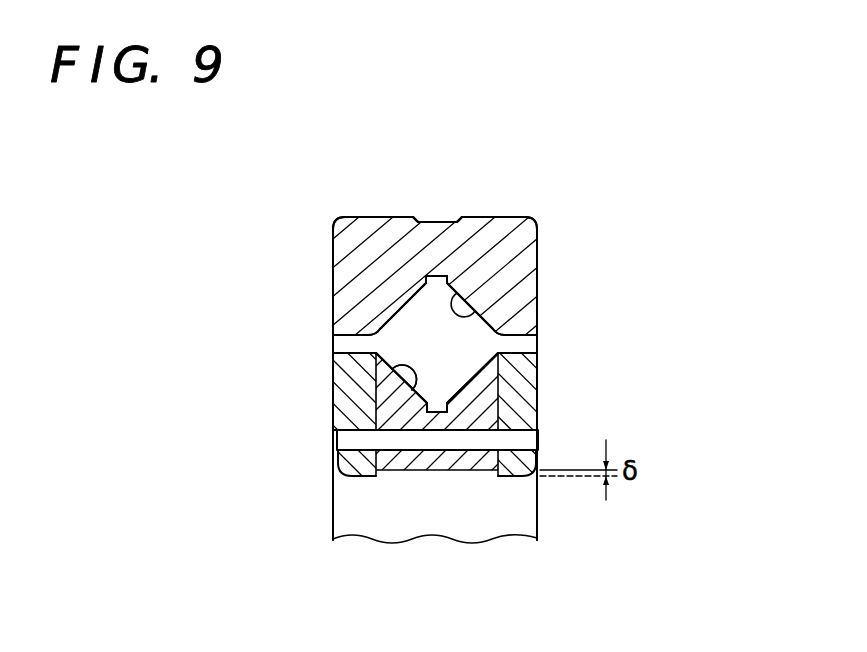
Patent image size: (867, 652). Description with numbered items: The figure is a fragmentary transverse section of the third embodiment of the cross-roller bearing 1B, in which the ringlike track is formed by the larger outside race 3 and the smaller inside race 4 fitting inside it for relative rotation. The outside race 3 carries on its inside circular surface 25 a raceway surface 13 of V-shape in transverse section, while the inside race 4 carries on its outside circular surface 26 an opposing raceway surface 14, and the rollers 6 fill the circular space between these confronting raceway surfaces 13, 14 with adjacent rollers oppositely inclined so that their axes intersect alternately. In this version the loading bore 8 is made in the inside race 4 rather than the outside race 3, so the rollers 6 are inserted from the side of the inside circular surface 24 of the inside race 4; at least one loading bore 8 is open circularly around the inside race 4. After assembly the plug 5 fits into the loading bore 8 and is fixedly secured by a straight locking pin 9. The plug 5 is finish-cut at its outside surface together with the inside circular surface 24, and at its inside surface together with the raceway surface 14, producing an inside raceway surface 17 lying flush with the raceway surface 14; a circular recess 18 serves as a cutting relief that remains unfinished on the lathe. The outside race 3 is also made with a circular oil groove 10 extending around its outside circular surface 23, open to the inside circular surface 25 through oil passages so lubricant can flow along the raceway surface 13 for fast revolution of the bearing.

The cross-roller bearing 1B is at (555, 240).
The outside race 3 is at (358, 262).
The inside race 4 is at (352, 396).
The roller 6 is at (418, 337).
The circular oil groove 10 is at (435, 222).
The outside circular surface 23 is at (503, 217).
The raceway surface 13 is at (470, 318).
The inside circular surface 25 is at (515, 343).
The outside circular surface 26 is at (355, 353).
The raceway surface 14 is at (408, 368).
The inside raceway surface 17 is at (362, 486).
The locking pin 9 is at (363, 442).
The loading bore 8 is at (378, 475).
The inside circular surface 24 is at (500, 476).
The circular recess 18 is at (437, 413).
The plug 5 is at (467, 462).